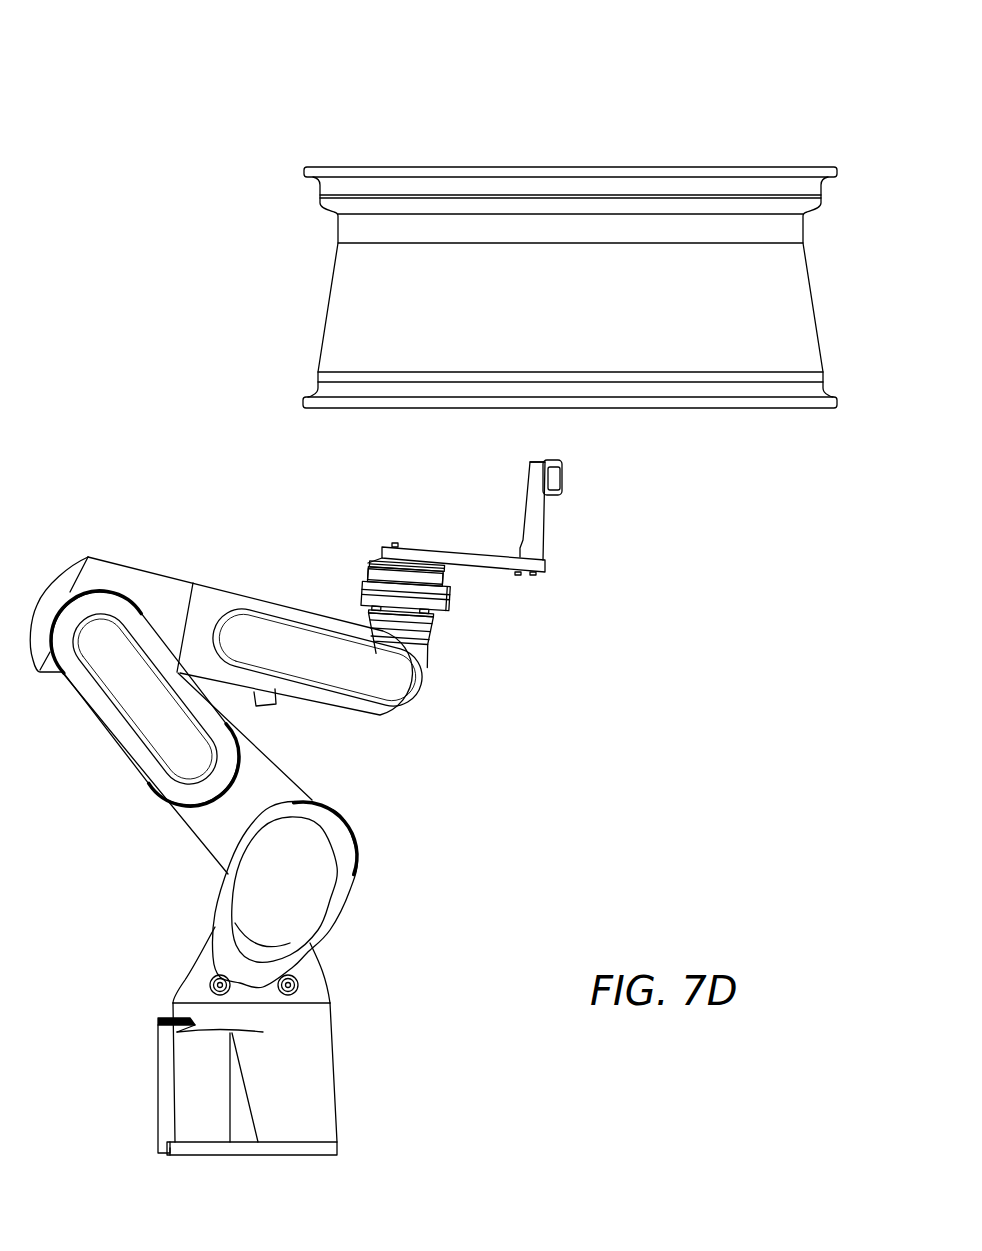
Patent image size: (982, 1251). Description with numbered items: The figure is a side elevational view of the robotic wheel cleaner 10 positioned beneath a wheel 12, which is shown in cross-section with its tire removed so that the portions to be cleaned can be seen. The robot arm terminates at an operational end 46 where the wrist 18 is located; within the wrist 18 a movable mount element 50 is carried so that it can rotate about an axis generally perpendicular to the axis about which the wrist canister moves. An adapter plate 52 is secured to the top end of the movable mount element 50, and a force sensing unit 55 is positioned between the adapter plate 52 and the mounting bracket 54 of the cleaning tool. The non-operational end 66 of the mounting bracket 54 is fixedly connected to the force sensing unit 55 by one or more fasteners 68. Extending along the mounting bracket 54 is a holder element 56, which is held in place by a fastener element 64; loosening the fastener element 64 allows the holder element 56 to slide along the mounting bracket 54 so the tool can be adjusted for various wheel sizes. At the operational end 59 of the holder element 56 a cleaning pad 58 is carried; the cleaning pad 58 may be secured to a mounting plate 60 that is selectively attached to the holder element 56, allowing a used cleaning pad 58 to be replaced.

The robotic wheel cleaner 10 is at (127, 73).
The wheel 12 is at (282, 268).
The wrist 18 is at (466, 629).
The operational end 46 is at (410, 710).
The movable mount element 50 is at (423, 622).
The adapter plate 52 is at (362, 597).
The mounting bracket 54 is at (500, 562).
The force sensing unit 55 is at (438, 579).
The holder element 56 is at (538, 522).
The cleaning pad 58 is at (556, 481).
The operational end 59 is at (552, 455).
The mounting plate 60 is at (532, 464).
The fastener element 64 is at (533, 576).
The non-operational end 66 is at (378, 539).
The fasteners 68 is at (396, 543).